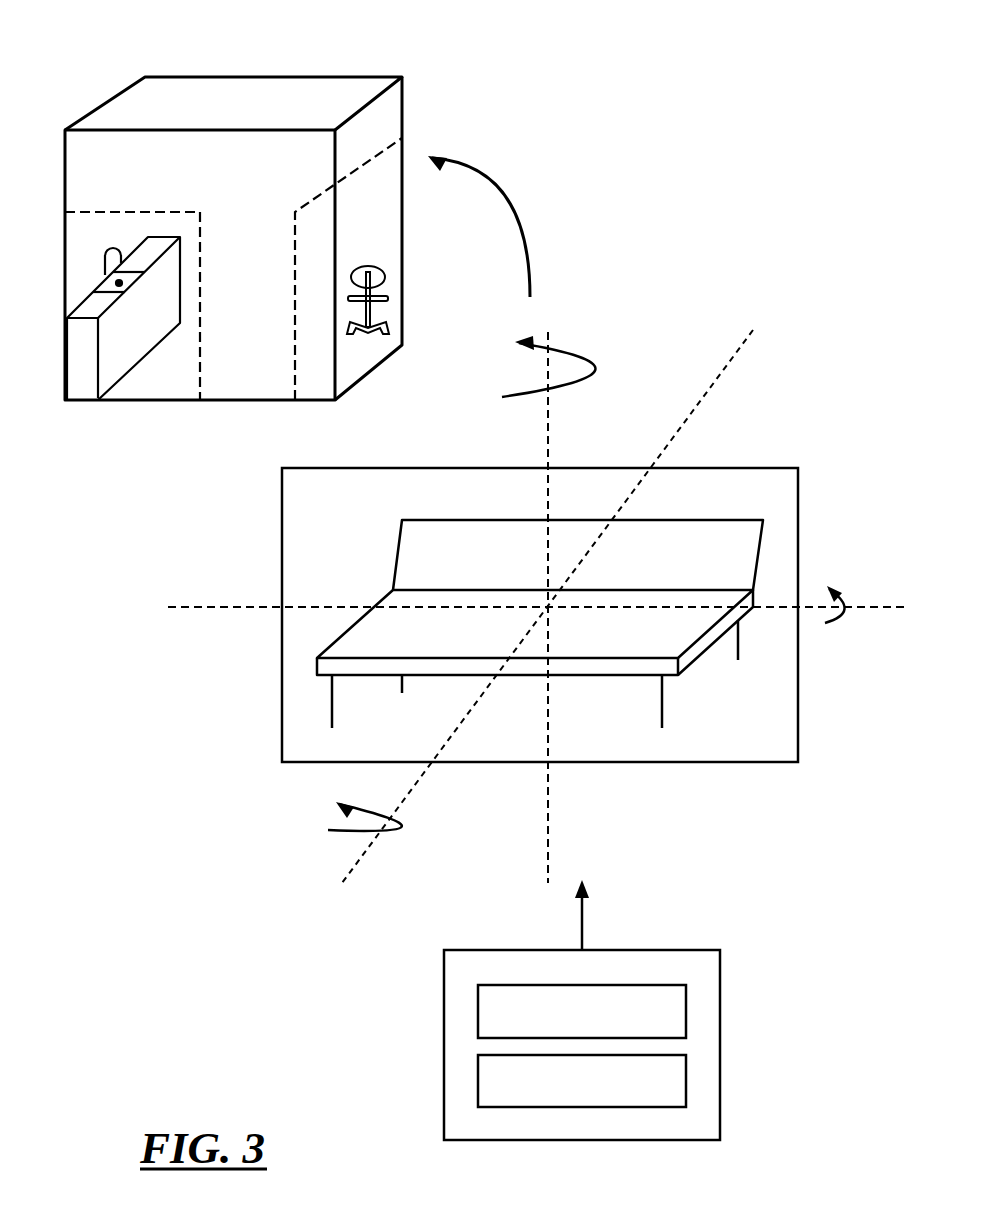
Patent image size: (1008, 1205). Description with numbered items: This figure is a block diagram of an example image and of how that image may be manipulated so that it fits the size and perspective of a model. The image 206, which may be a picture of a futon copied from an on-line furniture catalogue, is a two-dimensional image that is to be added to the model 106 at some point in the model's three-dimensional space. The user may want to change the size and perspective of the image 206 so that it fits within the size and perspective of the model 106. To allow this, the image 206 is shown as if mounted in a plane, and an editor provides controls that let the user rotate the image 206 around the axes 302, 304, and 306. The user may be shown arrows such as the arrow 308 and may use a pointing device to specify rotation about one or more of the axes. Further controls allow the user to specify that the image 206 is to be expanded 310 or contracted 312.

The model 106 is at (303, 73).
The image 206 is at (763, 468).
The axis 302 is at (558, 832).
The axis 304 is at (228, 598).
The axis 306 is at (755, 348).
The arrow 308 is at (580, 342).
The expanded 310 is at (582, 1011).
The contracted 312 is at (582, 1081).